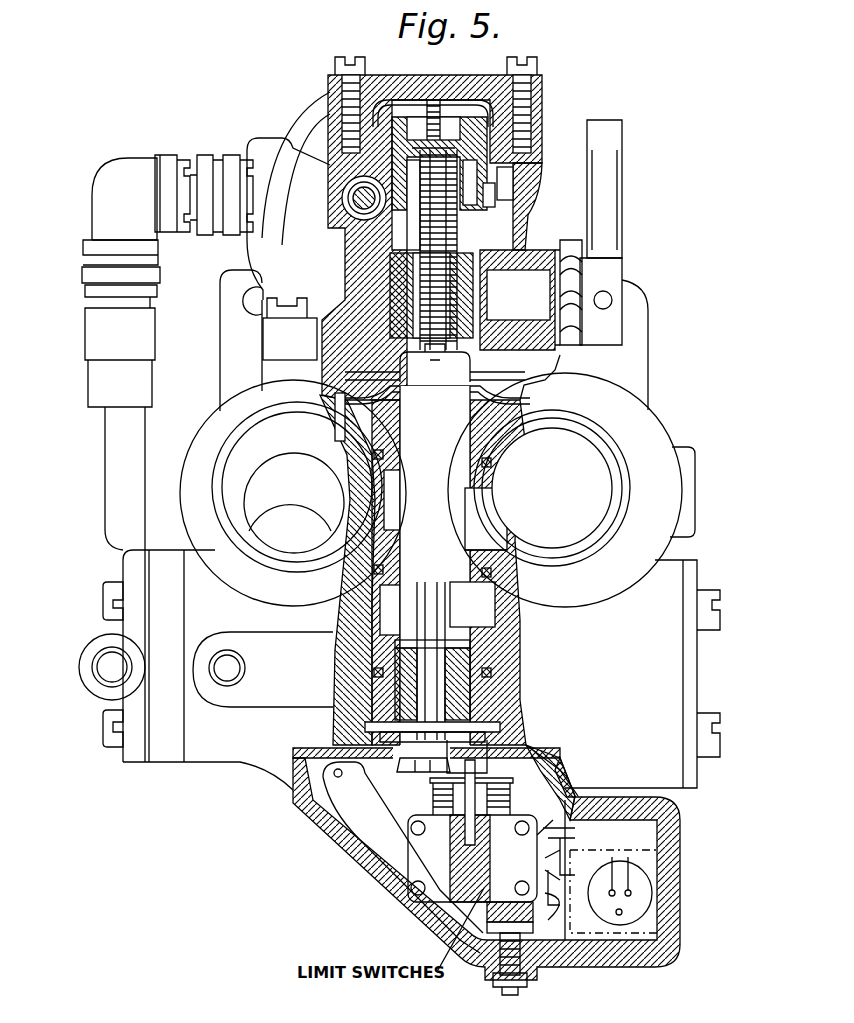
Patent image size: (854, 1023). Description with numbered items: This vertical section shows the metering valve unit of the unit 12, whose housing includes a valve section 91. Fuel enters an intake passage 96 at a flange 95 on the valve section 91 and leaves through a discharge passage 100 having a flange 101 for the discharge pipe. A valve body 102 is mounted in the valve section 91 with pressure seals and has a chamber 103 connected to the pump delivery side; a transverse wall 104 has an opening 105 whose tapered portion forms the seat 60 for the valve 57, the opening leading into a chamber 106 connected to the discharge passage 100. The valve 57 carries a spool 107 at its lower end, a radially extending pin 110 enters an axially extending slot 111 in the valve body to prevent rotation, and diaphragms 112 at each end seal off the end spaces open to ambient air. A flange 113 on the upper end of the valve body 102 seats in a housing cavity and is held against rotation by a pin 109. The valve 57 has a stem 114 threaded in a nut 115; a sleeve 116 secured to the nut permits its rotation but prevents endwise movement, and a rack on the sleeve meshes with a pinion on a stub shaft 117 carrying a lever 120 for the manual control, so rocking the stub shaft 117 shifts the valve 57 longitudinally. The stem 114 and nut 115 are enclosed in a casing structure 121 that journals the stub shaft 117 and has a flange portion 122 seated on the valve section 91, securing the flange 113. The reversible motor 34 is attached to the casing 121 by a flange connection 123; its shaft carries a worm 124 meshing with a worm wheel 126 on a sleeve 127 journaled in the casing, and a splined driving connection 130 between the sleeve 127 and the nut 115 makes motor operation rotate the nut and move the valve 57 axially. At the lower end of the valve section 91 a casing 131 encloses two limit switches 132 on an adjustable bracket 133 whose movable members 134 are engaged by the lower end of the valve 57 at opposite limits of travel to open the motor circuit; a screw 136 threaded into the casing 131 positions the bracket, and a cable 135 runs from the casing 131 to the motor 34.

The unit 12 is at (233, 775).
The reversible motor 34 is at (304, 126).
The metering valve 57 is at (450, 512).
The seat 60 is at (486, 539).
The valve section 91 is at (650, 686).
The flange 95 is at (218, 412).
The intake passage 96 is at (262, 488).
The discharge passage 100 is at (585, 448).
The flange 101 is at (655, 452).
The valve body 102 is at (482, 664).
The chamber 103 is at (478, 634).
The transverse wall 104 is at (490, 584).
The opening 105 is at (472, 604).
The chamber 106 is at (524, 500).
The spool 107 is at (448, 704).
The pin 109 is at (336, 420).
The radially extending pin 110 is at (400, 424).
The axially extending slot 111 is at (396, 462).
The diaphragms 112 is at (520, 392).
The flange 113 is at (528, 400).
The stem 114 is at (458, 246).
The nut 115 is at (470, 216).
The sleeve 116 is at (390, 264).
The stub shaft 117 is at (532, 305).
The lever 120 is at (605, 220).
The casing structure 121 is at (498, 192).
The flange portion 122 is at (302, 335).
The flange connection 123 is at (277, 200).
The worm 124 is at (352, 212).
The worm wheel 126 is at (513, 210).
The sleeve 127 is at (480, 172).
The splined driving connection 130 is at (442, 117).
The casing 131 is at (375, 882).
The limit switches 132 is at (548, 900).
The adjustable bracket 133 is at (432, 896).
The movable members 134 is at (570, 776).
The cable 135 is at (112, 486).
The screw 136 is at (490, 965).